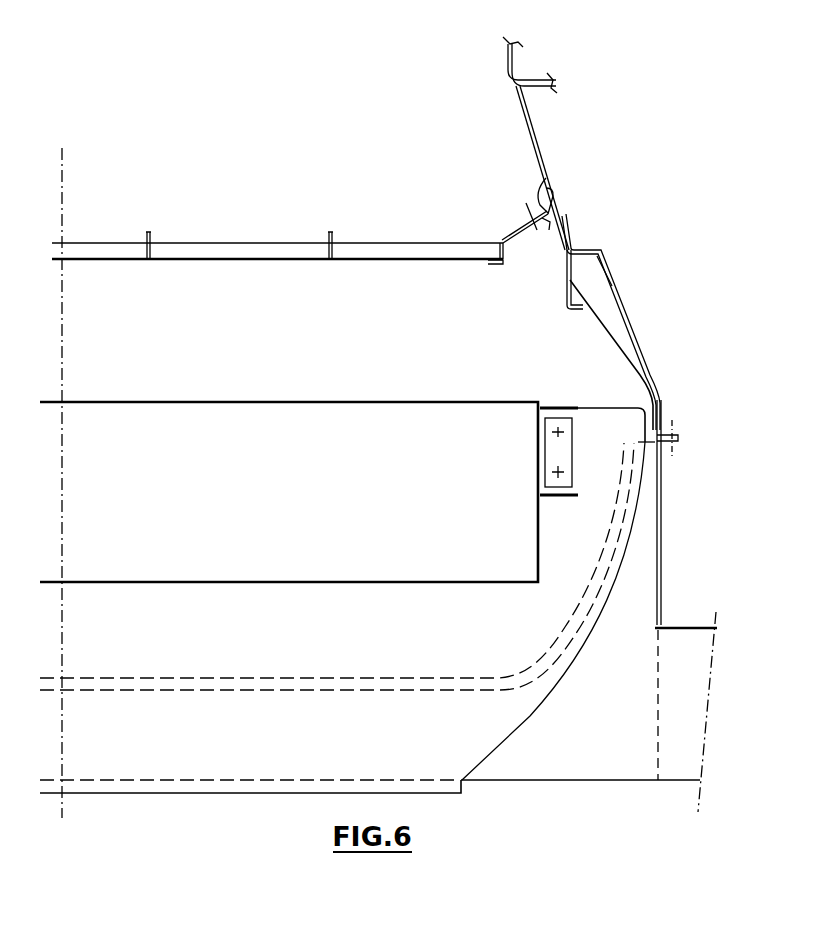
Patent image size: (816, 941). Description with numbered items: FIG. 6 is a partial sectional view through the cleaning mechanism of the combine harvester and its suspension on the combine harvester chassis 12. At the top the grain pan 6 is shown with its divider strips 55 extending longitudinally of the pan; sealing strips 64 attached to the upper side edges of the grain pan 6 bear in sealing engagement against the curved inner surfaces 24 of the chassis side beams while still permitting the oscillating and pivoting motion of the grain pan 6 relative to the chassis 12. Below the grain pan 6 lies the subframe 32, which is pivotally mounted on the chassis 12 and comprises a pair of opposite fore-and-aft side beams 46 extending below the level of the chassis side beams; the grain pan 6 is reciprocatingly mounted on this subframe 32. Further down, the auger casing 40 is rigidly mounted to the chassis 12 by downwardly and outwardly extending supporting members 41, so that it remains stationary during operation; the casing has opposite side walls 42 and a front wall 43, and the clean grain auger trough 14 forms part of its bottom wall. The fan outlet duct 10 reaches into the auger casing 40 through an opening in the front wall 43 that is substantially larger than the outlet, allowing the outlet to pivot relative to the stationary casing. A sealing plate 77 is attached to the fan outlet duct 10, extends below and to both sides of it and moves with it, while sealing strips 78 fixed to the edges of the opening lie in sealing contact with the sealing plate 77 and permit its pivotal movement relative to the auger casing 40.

The grain pan 6 is at (260, 243).
The divider strips 55 is at (150, 238).
The curved inner surfaces 24 is at (541, 152).
The sealing strips 64 is at (540, 192).
The combine harvester chassis 12 is at (563, 203).
The supporting members 41 is at (634, 318).
The subframe 32 is at (562, 406).
The side beams 46 is at (565, 500).
The side walls 42 is at (664, 556).
The fan outlet duct 10 is at (454, 585).
The sealing strips 78 is at (452, 692).
The sealing plate 77 is at (528, 714).
The front wall 43 is at (586, 703).
The auger casing 40 is at (610, 790).
The clean grain auger trough 14 is at (630, 782).